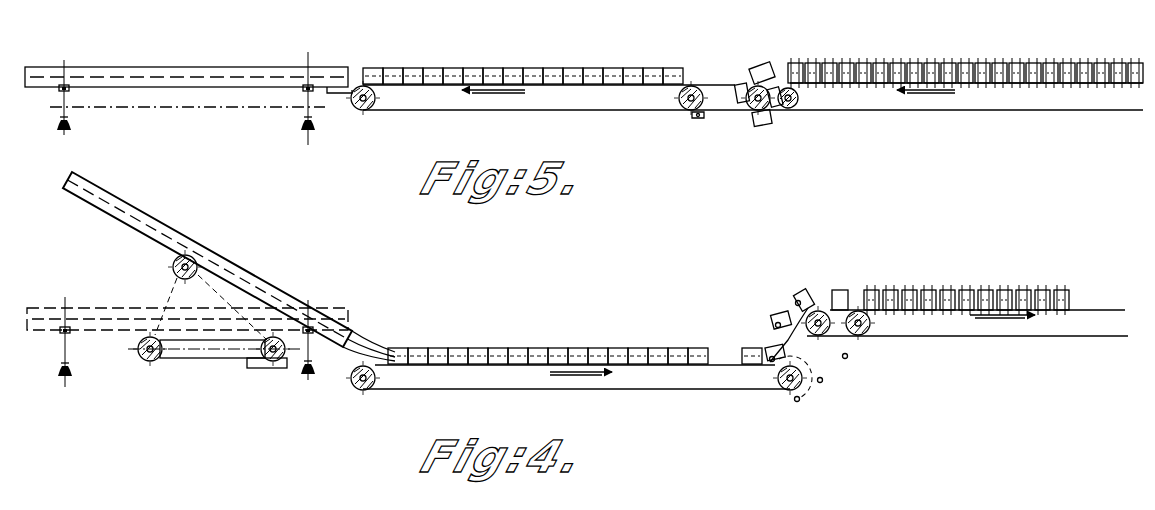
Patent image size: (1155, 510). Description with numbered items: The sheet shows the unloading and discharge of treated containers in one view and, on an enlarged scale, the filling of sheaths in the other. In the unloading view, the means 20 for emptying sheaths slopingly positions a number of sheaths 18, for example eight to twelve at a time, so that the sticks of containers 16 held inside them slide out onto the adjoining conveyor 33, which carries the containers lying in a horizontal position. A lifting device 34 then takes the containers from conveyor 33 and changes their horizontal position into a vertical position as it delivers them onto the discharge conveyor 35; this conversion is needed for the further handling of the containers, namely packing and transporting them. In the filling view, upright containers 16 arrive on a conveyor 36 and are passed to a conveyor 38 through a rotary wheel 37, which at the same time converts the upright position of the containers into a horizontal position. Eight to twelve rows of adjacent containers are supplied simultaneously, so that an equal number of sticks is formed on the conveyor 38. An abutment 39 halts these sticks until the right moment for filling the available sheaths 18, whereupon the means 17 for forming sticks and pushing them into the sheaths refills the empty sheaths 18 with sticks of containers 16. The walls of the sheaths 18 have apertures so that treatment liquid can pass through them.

In FIG. 5, the containers 16 is at (490, 75).
In FIG. 4, the containers 16 is at (540, 352).
In FIG. 5, the means for forming sticks of containers and pushing them into sheaths 17 is at (667, 53).
In FIG. 5, the sheaths 18 is at (243, 75).
In FIG. 4, the means for emptying sheaths 20 is at (293, 281).
In FIG. 4, the conveyor 33 is at (620, 390).
In FIG. 4, the lifting device 34 is at (847, 368).
In FIG. 4, the discharge conveyor 35 is at (967, 337).
In FIG. 5, the conveyor 36 is at (900, 111).
In FIG. 5, the rotary wheel 37 is at (764, 128).
In FIG. 5, the conveyor 38 is at (597, 111).
In FIG. 5, the abutment 39 is at (351, 78).